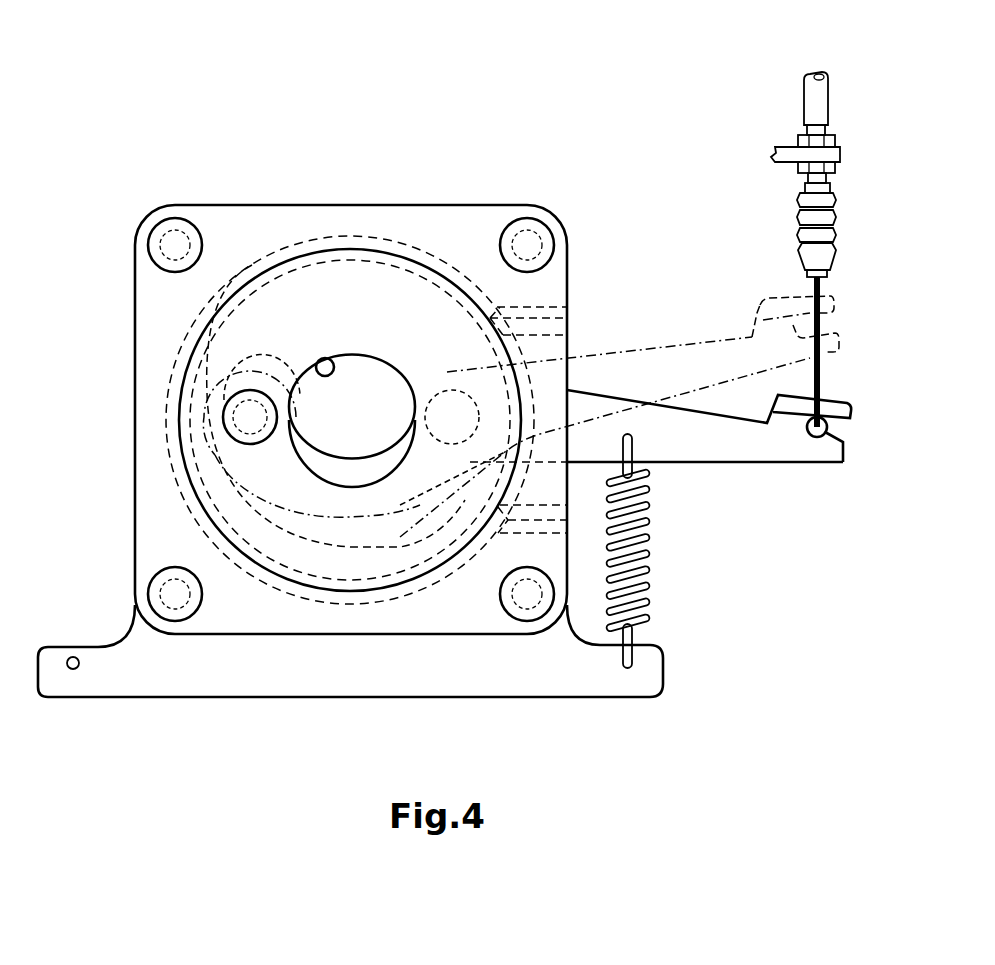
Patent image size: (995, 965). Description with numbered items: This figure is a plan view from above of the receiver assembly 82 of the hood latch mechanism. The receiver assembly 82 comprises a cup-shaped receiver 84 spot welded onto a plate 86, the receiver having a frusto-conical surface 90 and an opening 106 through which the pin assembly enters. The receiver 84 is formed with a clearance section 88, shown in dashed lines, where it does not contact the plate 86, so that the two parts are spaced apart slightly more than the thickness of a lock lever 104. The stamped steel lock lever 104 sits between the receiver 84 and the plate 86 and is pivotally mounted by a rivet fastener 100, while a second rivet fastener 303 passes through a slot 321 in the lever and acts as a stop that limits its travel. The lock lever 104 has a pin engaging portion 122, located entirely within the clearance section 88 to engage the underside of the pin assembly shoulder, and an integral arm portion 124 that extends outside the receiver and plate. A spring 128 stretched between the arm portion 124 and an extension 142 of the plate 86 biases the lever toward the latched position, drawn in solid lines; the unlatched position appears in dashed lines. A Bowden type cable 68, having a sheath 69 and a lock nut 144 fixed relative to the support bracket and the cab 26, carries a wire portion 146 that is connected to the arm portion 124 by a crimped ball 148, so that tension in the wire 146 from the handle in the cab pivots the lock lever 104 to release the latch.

The cab 26 is at (787, 157).
The cable 68 is at (852, 191).
The sheath 69 is at (818, 93).
The receiver assembly 82 is at (466, 195).
The cup-shaped receiver 84 is at (245, 610).
The plate 86 is at (375, 672).
The clearance section 88 is at (545, 325).
The frusto-conical surface 90 is at (332, 293).
The rivet fastener 100 is at (450, 420).
The lock lever 104 is at (798, 474).
The opening 106 is at (334, 361).
The pin engaging portion 122 is at (425, 463).
The arm portion 124 is at (720, 440).
The spring 128 is at (648, 545).
The extension 142 is at (652, 670).
The lock nut 144 is at (828, 138).
The wire portion 146 is at (822, 282).
The crimped ball 148 is at (828, 428).
The rivet fastener 303 is at (247, 416).
The slot 321 is at (258, 345).